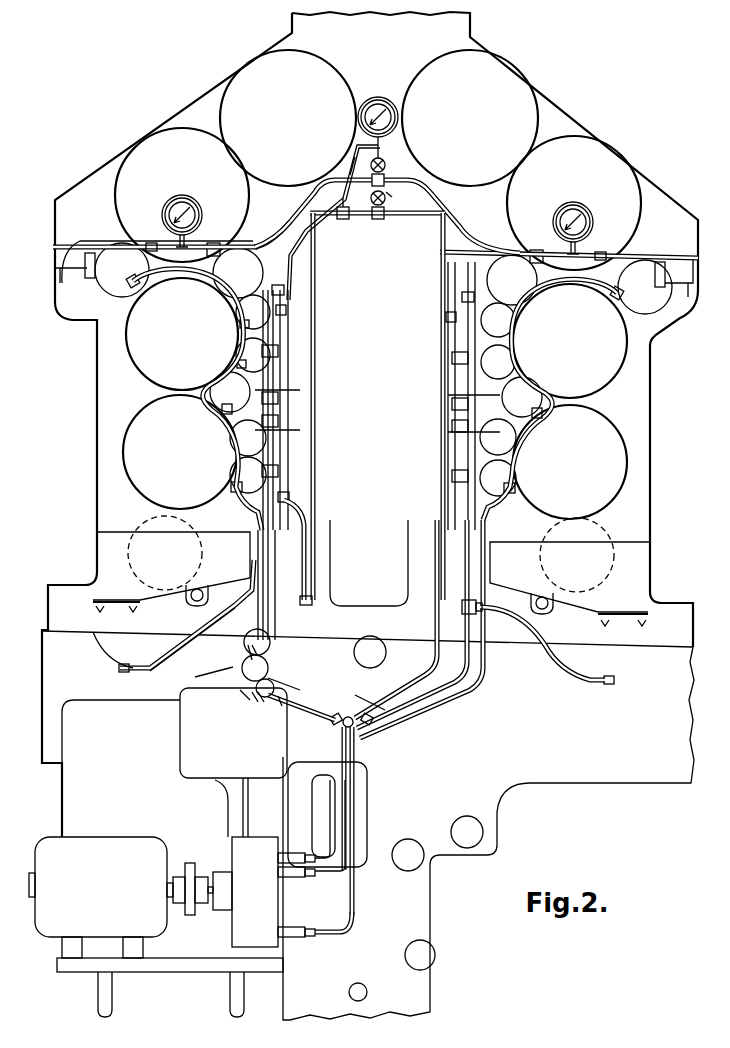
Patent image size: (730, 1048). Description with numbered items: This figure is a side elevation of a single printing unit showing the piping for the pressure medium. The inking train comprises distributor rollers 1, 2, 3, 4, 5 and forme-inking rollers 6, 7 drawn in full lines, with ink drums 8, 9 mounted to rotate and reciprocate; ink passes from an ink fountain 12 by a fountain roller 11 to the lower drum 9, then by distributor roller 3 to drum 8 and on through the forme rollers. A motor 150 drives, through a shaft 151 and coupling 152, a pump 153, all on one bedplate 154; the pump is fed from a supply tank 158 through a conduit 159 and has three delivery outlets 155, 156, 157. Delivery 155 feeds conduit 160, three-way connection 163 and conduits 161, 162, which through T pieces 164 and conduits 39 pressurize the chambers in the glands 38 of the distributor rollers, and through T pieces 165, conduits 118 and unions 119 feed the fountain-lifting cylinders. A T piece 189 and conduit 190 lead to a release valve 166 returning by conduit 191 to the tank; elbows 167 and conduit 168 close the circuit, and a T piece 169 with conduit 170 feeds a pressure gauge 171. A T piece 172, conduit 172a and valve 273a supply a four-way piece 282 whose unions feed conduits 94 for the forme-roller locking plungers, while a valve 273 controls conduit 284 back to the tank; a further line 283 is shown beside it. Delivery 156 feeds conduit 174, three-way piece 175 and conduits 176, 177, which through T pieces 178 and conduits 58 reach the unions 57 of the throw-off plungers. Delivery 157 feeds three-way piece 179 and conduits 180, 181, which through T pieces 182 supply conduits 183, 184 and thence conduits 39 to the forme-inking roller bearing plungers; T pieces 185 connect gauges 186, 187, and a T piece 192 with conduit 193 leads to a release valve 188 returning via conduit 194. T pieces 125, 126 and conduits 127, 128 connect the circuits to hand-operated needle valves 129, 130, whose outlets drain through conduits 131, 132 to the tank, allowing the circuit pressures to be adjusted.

The distributor roller 1 is at (259, 473).
The distributor roller 2 is at (252, 439).
The distributor roller 3 is at (227, 393).
The distributor roller 4 is at (252, 355).
The distributor roller 5 is at (252, 312).
The forme-inking roller 6 is at (279, 291).
The forme-inking roller 7 is at (113, 280).
The ink drum 8 is at (133, 348).
The ink drum 9 is at (142, 449).
The fountain roller 11 is at (163, 520).
The ink fountain 12 is at (110, 540).
The gland 38 is at (80, 275).
The conduit 39 is at (290, 423).
The union 57 is at (233, 486).
The conduit 58 is at (278, 497).
The conduit 94 is at (330, 182).
The conduit 118 is at (543, 652).
The union 119 is at (118, 667).
The T piece 125 is at (337, 742).
The T piece 126 is at (357, 637).
The conduit 127 is at (300, 680).
The conduit 128 is at (270, 650).
The pressure control valve 129 is at (280, 696).
The pressure control valve 130 is at (248, 690).
The conduit 131 is at (277, 694).
The conduit 132 is at (240, 692).
The motor 150 is at (100, 860).
The shaft 151 is at (168, 903).
The coupling 152 is at (192, 863).
The pump 153 is at (238, 915).
The bedplate 154 is at (168, 965).
The delivery outlet 155 is at (282, 932).
The delivery outlet 156 is at (282, 858).
The delivery outlet 157 is at (287, 868).
The supply tank 158 is at (187, 753).
The conduit 159 is at (247, 802).
The conduit 160 is at (353, 920).
The conduit 161 is at (373, 691).
The conduit 162 is at (410, 692).
The three-way connection 163 is at (355, 725).
The T piece 164 is at (291, 357).
The T piece 165 is at (305, 600).
The release valve 166 is at (250, 643).
The elbow 167 is at (308, 216).
The conduit 168 is at (432, 222).
The T piece 169 is at (343, 219).
The conduit 170 is at (325, 193).
The pressure gauge 171 is at (378, 105).
The T piece 172 is at (378, 222).
The conduit 172a is at (381, 206).
The conduit 174 is at (340, 803).
The three-way piece 175 is at (360, 767).
The conduit 176 is at (330, 752).
The conduit 177 is at (428, 717).
The T piece 178 is at (140, 284).
The three-way piece 179 is at (352, 740).
The conduit 180 is at (370, 716).
The conduit 181 is at (433, 700).
The T piece 182 is at (222, 256).
The conduit 183 is at (118, 246).
The conduit 184 is at (375, 274).
The T piece 185 is at (175, 240).
The pressure gauge 186 is at (180, 205).
The pressure gauge 187 is at (574, 210).
The release valve 188 is at (258, 692).
The T piece 189 is at (273, 628).
The conduit 190 is at (253, 645).
The conduit 191 is at (243, 653).
The T piece 192 is at (265, 663).
The conduit 193 is at (95, 632).
The conduit 194 is at (255, 690).
The valve 273 is at (385, 165).
The valve 273a is at (392, 197).
The four-way piece 282 is at (386, 180).
The tube 283 is at (355, 157).
The conduit 284 is at (343, 162).